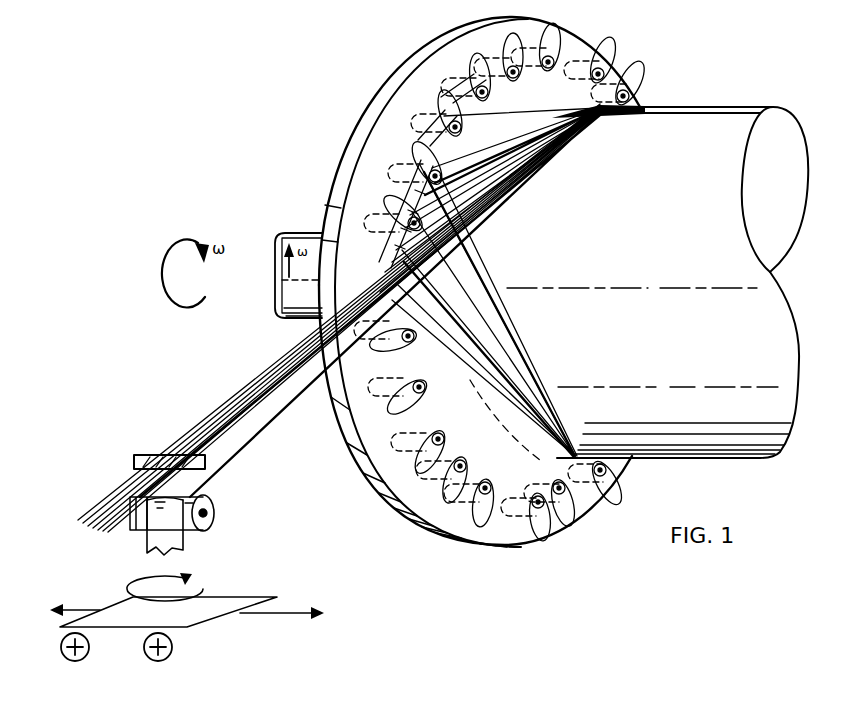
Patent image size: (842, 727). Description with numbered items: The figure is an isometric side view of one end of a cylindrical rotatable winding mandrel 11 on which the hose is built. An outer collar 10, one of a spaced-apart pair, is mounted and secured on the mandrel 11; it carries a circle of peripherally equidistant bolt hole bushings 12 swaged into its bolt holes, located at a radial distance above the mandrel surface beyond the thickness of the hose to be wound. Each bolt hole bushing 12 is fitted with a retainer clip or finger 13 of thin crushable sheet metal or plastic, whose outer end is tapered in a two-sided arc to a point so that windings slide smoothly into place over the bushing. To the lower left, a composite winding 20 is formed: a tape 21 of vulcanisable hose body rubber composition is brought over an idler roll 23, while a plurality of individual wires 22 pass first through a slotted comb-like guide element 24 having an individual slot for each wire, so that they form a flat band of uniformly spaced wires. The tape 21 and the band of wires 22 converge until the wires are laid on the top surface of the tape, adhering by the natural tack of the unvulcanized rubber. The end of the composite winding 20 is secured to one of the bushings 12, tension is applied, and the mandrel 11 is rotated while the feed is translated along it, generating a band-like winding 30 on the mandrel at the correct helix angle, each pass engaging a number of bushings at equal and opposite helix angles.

The outer collar 10 is at (432, 52).
The winding mandrel 11 is at (747, 118).
The bolt hole bushing 12 is at (412, 162).
The retainer clip or finger 13 is at (437, 114).
The composite winding 20 is at (262, 390).
The tape 21 is at (185, 545).
The wires 22 is at (102, 505).
The idler roll 23 is at (213, 513).
The slotted comb-like guide element 24 is at (141, 453).
The band-like winding 30 is at (513, 150).